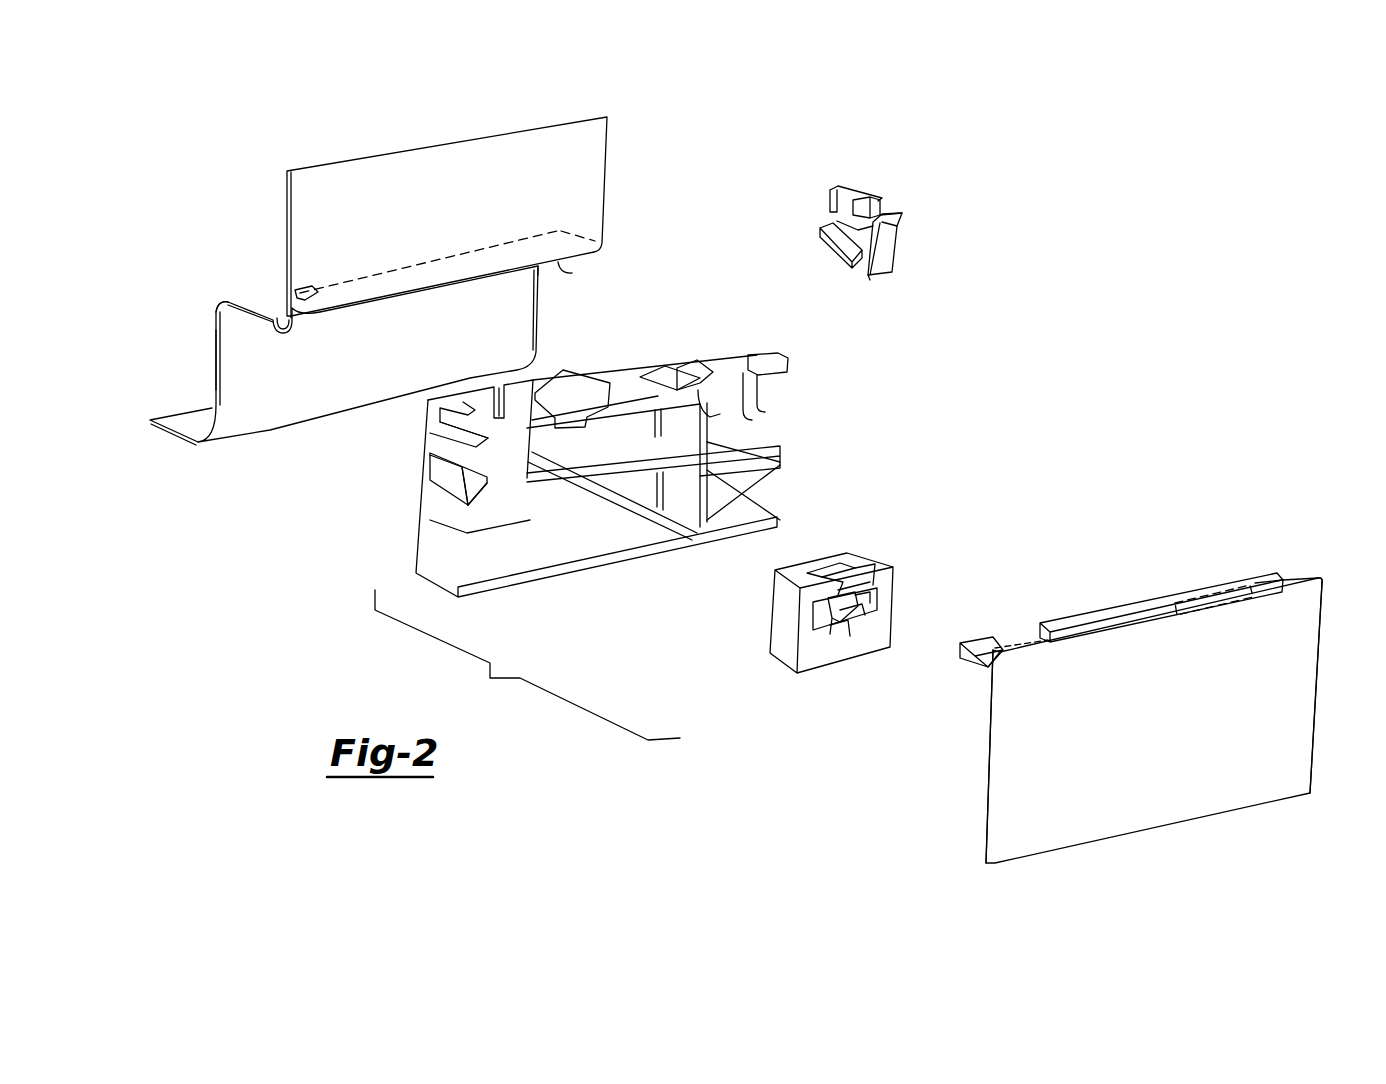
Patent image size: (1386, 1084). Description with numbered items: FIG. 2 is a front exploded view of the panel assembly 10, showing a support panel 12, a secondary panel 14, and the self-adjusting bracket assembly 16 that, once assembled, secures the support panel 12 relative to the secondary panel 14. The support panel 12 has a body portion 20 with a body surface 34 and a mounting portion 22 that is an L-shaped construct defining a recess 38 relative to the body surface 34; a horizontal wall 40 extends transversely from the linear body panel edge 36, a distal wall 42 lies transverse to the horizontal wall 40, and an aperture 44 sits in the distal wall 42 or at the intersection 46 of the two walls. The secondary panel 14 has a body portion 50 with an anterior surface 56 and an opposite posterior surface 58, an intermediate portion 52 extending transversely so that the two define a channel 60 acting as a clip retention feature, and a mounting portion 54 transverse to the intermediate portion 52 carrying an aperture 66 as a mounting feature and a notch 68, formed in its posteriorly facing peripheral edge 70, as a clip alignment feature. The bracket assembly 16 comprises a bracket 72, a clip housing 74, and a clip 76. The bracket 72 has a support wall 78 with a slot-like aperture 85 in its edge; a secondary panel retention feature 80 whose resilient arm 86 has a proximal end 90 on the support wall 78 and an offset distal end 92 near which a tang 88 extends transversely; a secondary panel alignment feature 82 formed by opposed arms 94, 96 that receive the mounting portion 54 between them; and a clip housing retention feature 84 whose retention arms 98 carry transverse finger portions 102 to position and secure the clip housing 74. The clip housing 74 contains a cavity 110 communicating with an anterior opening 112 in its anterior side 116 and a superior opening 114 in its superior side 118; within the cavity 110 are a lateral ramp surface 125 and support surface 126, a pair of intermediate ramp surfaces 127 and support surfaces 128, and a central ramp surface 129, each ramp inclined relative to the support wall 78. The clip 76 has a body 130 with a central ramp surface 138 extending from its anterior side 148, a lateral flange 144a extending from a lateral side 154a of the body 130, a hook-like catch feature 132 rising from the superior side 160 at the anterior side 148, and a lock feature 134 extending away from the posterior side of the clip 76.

The fastening system 10 is at (985, 150).
The support panel 12 is at (617, 170).
The secondary panel 14 is at (1132, 676).
The bracket assembly 16 is at (527, 665).
The body portion 20 is at (425, 217).
The mounting portion 22 is at (336, 331).
The body surface 34 is at (285, 198).
The body panel edge 36 is at (572, 273).
The recess 38 is at (541, 287).
The horizontal wall 40 is at (252, 298).
The distal wall 42 is at (215, 356).
The aperture 44 is at (283, 334).
The intersection 46 is at (214, 325).
The body portion 50 is at (1316, 755).
The intermediate portion 52 is at (1320, 577).
The mounting portion 54 is at (1290, 575).
The anterior surface 56 is at (1118, 753).
The posterior surface 58 is at (984, 814).
The channel 60 is at (990, 672).
The aperture 66 is at (1153, 592).
The notch 68 is at (1000, 638).
The posteriorly facing peripheral edge 70 is at (1084, 614).
The bracket 72 is at (571, 454).
The clip housing 74 is at (820, 611).
The clip 76 is at (880, 236).
The support wall 78 is at (422, 546).
The secondary panel retention feature 80 is at (690, 352).
The secondary panel alignment feature 82 is at (458, 450).
The clip housing retention feature 84 is at (482, 510).
The aperture 85 is at (504, 384).
The arm 86 is at (672, 370).
The tang 88 is at (723, 365).
The proximal end 90 is at (646, 378).
The distal end 92 is at (768, 400).
The opposed arm 94 is at (441, 401).
The opposed arm 96 is at (456, 447).
The retention arm 98 is at (445, 497).
The finger portion 102 is at (489, 503).
The cavity 110 is at (838, 644).
The anterior opening 112 is at (813, 618).
The superior opening 114 is at (850, 550).
The anterior side 116 is at (808, 660).
The superior side 118 is at (875, 565).
The ramp surface 125 is at (872, 596).
The support surface 126 is at (843, 578).
The ramp surfaces 127 is at (866, 614).
The support surfaces 128 is at (872, 588).
The ramp surface 129 is at (850, 640).
The body 130 is at (905, 240).
The catch feature 132 is at (901, 213).
The lock feature 134 is at (831, 189).
The central ramp surface 138 is at (864, 277).
The lateral flange 144a is at (822, 233).
The anterior side 148 is at (890, 263).
The lateral side 154a is at (858, 228).
The superior side 160 is at (872, 197).